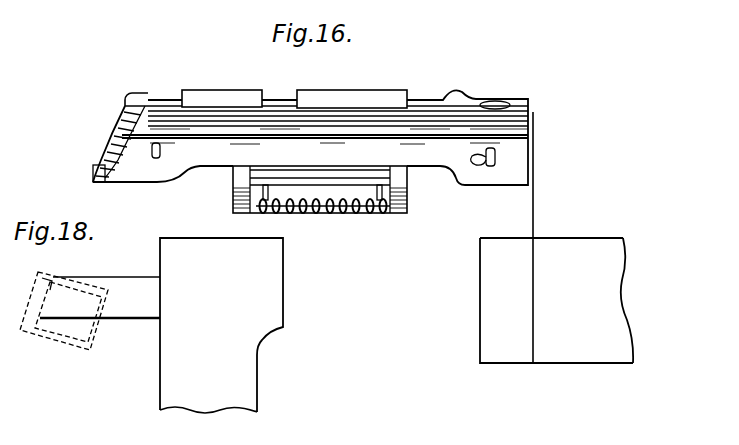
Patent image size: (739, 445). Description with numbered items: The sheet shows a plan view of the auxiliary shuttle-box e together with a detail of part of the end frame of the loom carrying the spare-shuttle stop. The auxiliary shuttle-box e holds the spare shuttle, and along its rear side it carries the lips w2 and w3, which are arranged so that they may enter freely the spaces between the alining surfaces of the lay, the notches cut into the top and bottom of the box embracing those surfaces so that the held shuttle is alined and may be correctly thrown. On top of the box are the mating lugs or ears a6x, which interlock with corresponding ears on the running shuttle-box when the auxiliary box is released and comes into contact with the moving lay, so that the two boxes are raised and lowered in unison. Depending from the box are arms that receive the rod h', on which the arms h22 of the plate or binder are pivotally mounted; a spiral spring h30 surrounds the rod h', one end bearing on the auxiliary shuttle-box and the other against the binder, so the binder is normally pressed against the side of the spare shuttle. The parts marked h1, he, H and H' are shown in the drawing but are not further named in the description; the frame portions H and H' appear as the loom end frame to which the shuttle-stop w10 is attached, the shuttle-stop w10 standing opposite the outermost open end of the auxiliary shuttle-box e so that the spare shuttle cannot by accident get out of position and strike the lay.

In FIG. 16, the lip w2 is at (207, 97).
In FIG. 16, the lip w3 is at (360, 117).
In FIG. 16, the mating lug or ear a6x is at (490, 167).
In FIG. 16, the arm of plate or binder h22 is at (395, 229).
In FIG. 16, the bar h1 is at (318, 217).
In FIG. 16, the cross bar he is at (280, 182).
In FIG. 16, the rod h' is at (291, 188).
In FIG. 16, the spiral spring h30 is at (350, 216).
In FIG. 16, the shuttle-stop w10 is at (538, 218).
In FIG. 18, the shuttle-stop w10 is at (128, 315).
In FIG. 16, the frame H is at (534, 300).
In FIG. 18, the frame H is at (222, 325).
In FIG. 16, the frame part H' is at (634, 300).
In FIG. 18, the auxiliary shuttle-box e is at (64, 321).